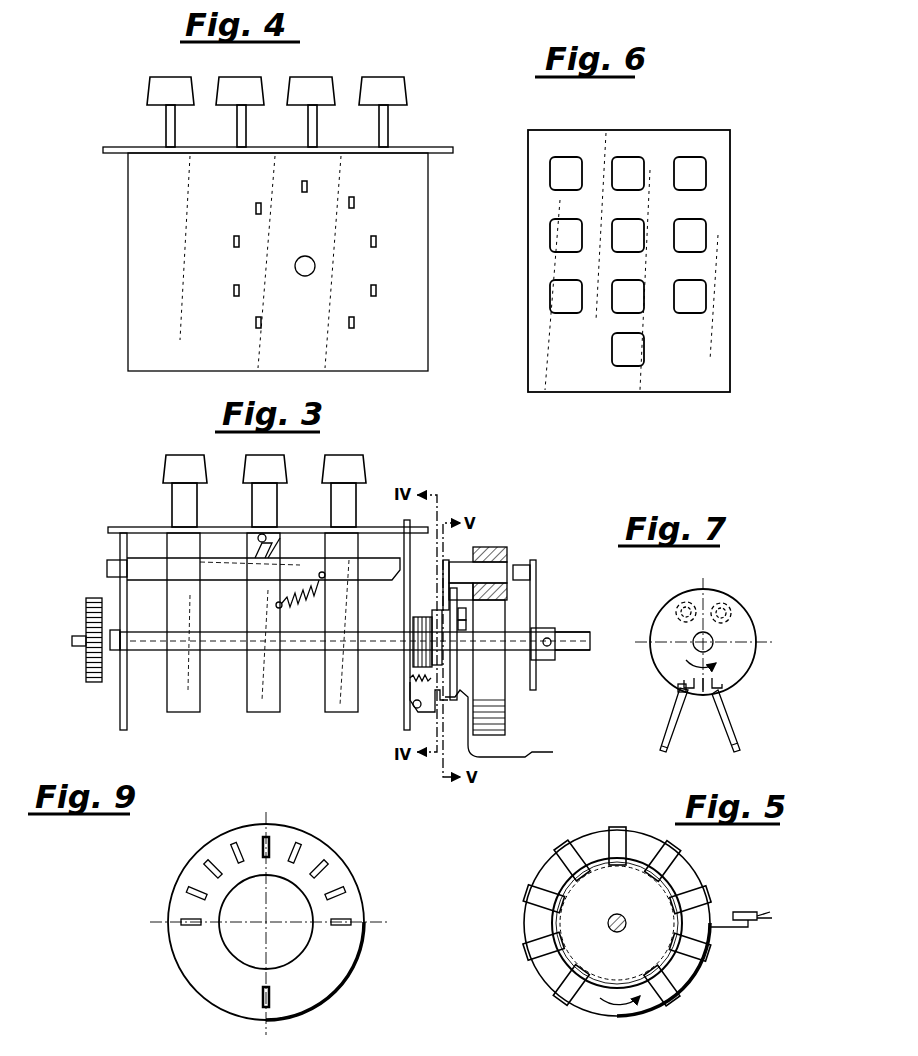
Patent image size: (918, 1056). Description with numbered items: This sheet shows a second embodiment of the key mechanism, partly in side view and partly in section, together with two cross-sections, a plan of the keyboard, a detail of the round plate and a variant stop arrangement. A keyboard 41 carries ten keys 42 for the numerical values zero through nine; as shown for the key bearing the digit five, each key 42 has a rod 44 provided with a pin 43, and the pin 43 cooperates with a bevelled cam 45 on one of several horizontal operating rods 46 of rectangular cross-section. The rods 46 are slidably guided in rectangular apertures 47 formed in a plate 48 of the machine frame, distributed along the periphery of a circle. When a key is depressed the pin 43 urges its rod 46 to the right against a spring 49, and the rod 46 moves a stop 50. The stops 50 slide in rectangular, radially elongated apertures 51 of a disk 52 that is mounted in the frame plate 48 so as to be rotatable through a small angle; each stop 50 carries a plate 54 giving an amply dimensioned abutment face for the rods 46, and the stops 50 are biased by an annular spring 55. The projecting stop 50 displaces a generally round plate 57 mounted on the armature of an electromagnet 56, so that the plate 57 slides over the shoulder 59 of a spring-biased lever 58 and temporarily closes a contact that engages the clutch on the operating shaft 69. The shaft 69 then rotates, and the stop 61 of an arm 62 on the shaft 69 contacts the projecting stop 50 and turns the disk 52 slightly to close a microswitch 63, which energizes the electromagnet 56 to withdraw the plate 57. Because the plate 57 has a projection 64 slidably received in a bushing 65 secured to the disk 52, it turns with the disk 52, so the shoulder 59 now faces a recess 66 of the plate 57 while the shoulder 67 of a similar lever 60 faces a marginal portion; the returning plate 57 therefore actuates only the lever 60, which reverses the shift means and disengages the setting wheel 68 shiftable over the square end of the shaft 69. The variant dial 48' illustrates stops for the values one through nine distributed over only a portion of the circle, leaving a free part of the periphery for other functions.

In FIG. 4, the keyboard 41 is at (420, 149).
In FIG. 6, the keyboard 41 is at (660, 140).
In FIG. 3, the keyboard 41 is at (147, 527).
In FIG. 4, the key 42 is at (238, 84).
In FIG. 6, the key 42 is at (566, 158).
In FIG. 3, the key 42 is at (250, 456).
In FIG. 3, the pin 43 is at (258, 536).
In FIG. 3, the rod 44 is at (255, 688).
In FIG. 3, the bevelled cam 45 is at (279, 536).
In FIG. 3, the operating rod 46 is at (147, 573).
In FIG. 4, the rectangular aperture 47 is at (356, 210).
In FIG. 4, the plate 48 is at (297, 262).
In FIG. 3, the plate 48 is at (390, 609).
In FIG. 9, the dial disc 48' is at (270, 925).
In FIG. 3, the spring 49 is at (296, 602).
In FIG. 3, the stop 50 is at (455, 570).
In FIG. 3, the radially elongated aperture 51 is at (497, 548).
In FIG. 3, the disk 52 is at (507, 552).
In FIG. 5, the disk 52 is at (545, 872).
In FIG. 3, the plate 54 is at (443, 583).
In FIG. 5, the plate 54 is at (616, 850).
In FIG. 3, the annular spring 55 is at (468, 682).
In FIG. 5, the annular spring 55 is at (645, 945).
In FIG. 3, the electromagnet 56 is at (425, 648).
In FIG. 3, the plate 57 is at (448, 636).
In FIG. 7, the plate 57 is at (667, 636).
In FIG. 7, the lever 58 is at (732, 716).
In FIG. 7, the shoulder 59 is at (740, 684).
In FIG. 3, the lever 60 is at (505, 757).
In FIG. 7, the lever 60 is at (676, 716).
In FIG. 3, the stop 61 is at (518, 565).
In FIG. 3, the arm 62 is at (534, 566).
In FIG. 5, the microswitch 63 is at (745, 912).
In FIG. 3, the projection 64 is at (466, 625).
In FIG. 7, the projection 64 is at (676, 598).
In FIG. 3, the bushing 65 is at (465, 614).
In FIG. 7, the bushing 65 is at (705, 608).
In FIG. 7, the recess 66 is at (697, 692).
In FIG. 3, the shoulder 67 is at (470, 702).
In FIG. 7, the shoulder 67 is at (678, 687).
In FIG. 3, the setting wheel 68 is at (95, 684).
In FIG. 3, the operating shaft 69 is at (566, 650).
In FIG. 5, the operating shaft 69 is at (608, 923).